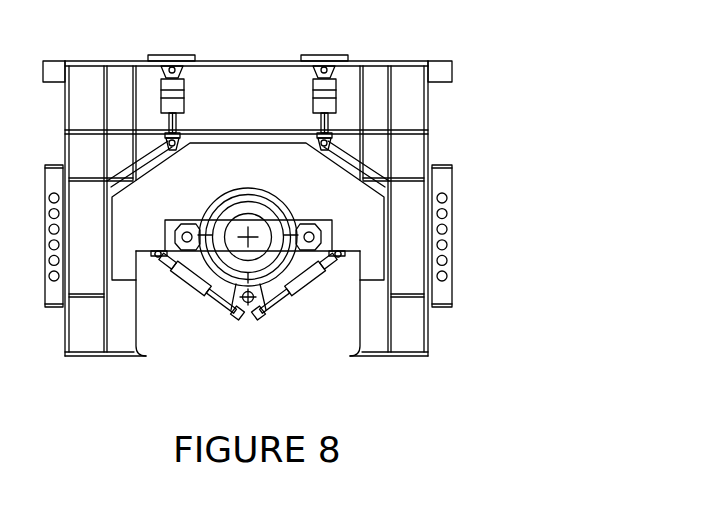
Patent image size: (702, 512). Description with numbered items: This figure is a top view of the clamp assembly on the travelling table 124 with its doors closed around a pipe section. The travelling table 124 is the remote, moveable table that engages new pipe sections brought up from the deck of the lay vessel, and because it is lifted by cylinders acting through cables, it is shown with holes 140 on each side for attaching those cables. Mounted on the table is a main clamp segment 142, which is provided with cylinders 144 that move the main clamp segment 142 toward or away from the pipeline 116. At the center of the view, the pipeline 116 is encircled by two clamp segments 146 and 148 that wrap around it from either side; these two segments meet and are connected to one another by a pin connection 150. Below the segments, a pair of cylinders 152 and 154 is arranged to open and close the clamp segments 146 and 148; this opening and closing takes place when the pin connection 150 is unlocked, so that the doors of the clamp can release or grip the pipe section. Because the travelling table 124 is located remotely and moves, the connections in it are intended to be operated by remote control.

The pipeline 116 is at (291, 222).
The travelling table 124 is at (485, 177).
The holes 140 is at (453, 248).
The main clamp segment 142 is at (378, 242).
The cylinders 144 is at (333, 97).
The clamp segment 146 is at (186, 231).
The clamp segment 148 is at (311, 229).
The pin connection 150 is at (249, 303).
The cylinder 152 is at (205, 222).
The cylinder 154 is at (295, 290).